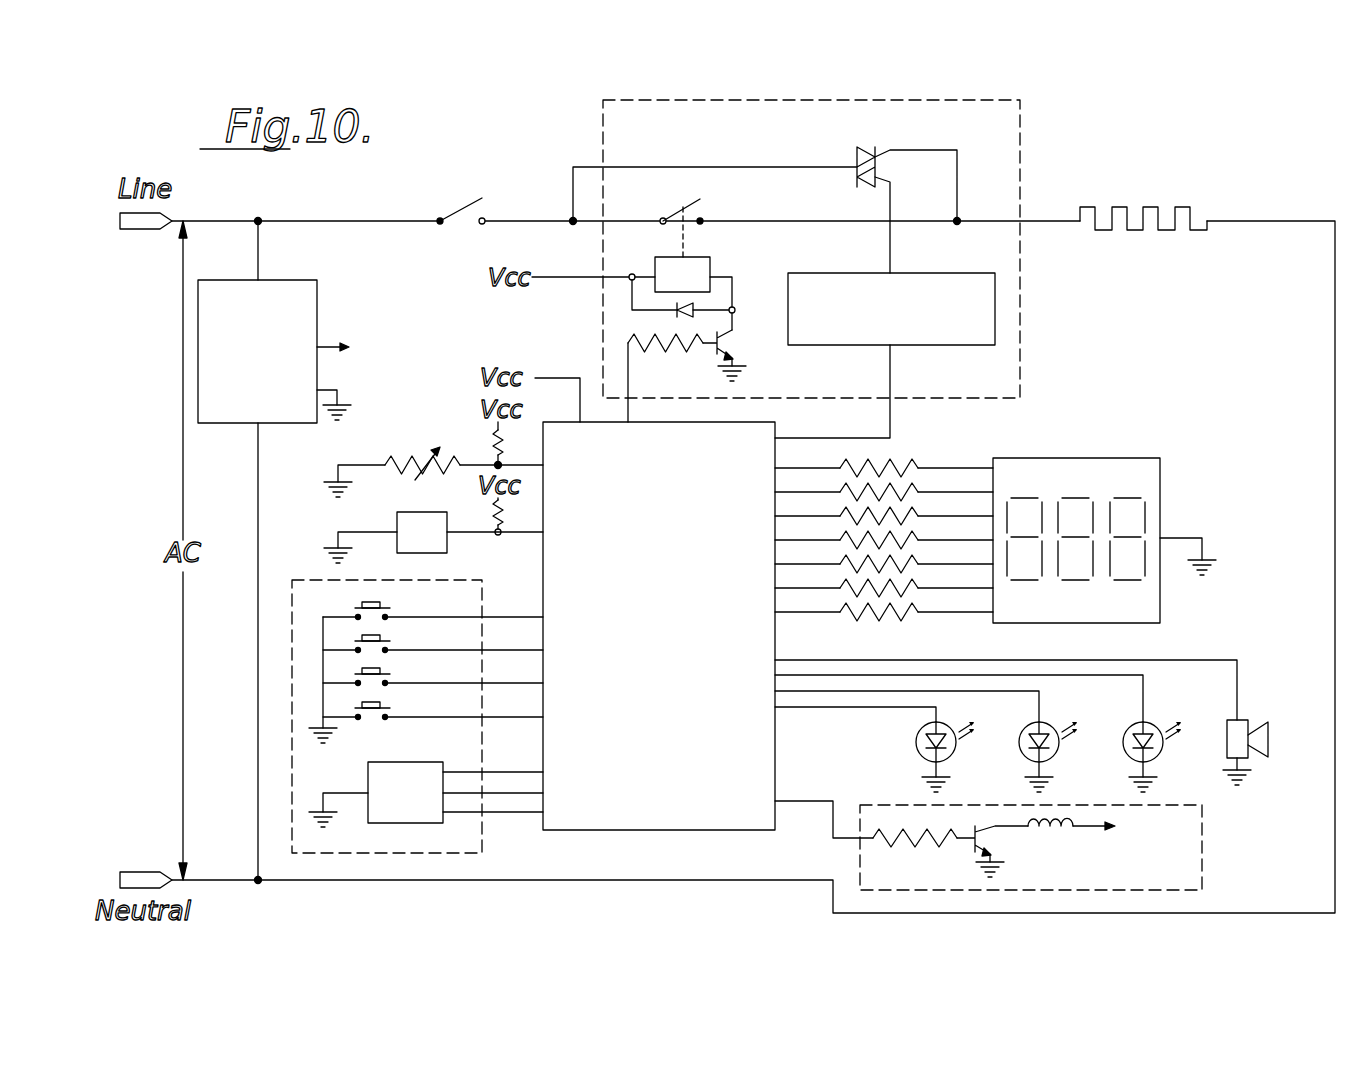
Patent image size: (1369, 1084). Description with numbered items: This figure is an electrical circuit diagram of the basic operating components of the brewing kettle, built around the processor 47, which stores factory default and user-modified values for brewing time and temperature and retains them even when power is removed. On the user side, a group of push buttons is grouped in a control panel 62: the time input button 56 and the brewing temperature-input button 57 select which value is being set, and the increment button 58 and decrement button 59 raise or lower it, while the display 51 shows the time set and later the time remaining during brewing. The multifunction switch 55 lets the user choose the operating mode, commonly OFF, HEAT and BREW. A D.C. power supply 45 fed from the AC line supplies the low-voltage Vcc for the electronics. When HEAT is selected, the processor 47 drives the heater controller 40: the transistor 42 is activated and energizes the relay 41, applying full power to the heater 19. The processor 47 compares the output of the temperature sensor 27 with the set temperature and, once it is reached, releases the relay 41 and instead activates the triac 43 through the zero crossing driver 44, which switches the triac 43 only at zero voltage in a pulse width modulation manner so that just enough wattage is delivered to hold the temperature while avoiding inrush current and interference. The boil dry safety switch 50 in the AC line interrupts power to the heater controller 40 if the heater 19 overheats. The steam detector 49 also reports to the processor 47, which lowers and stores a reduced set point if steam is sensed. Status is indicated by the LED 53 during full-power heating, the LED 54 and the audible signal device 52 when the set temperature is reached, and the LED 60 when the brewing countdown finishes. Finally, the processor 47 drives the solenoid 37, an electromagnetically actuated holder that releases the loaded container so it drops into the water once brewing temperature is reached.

The heater 19 is at (1158, 206).
The temperature sensor 27 is at (391, 456).
The solenoid 37 is at (1048, 838).
The heater controller 40 is at (1022, 137).
The relay 41 is at (683, 210).
The transistor 42 is at (722, 340).
The triac 43 is at (857, 160).
The zero crossing driver 44 is at (838, 273).
The DC power supply 45 is at (305, 297).
The processor 47 is at (757, 736).
The steam detector 49 is at (413, 518).
The boil dry safety switch 50 is at (461, 207).
The display 51 is at (1130, 467).
The audible signal device 52 is at (1227, 752).
The LED 53 is at (1022, 752).
The LED 54 is at (920, 755).
The multifunction switch 55 is at (428, 772).
The time input button 56 is at (388, 608).
The brewing temperature-input button 57 is at (388, 641).
The increment button 58 is at (388, 674).
The decrement button 59 is at (388, 708).
The LED 60 is at (1125, 752).
The control panel 62 is at (482, 818).